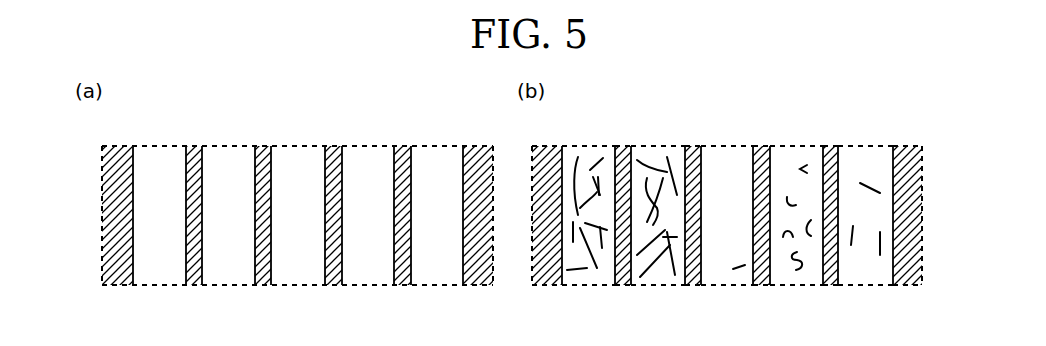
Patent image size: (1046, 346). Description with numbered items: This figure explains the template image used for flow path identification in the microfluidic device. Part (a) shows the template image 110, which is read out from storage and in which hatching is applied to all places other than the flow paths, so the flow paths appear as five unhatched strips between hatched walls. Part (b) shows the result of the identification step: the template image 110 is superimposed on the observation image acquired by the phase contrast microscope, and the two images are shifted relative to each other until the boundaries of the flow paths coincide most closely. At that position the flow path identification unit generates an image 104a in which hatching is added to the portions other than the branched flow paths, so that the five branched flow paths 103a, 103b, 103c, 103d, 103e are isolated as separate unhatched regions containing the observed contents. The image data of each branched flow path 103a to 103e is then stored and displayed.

The template image 110 is at (374, 285).
The branched flow path 103a is at (867, 147).
The branched flow path 103b is at (797, 147).
The branched flow path 103c is at (728, 147).
The branched flow path 103d is at (658, 147).
The branched flow path 103e is at (592, 147).
The image 104a is at (833, 285).